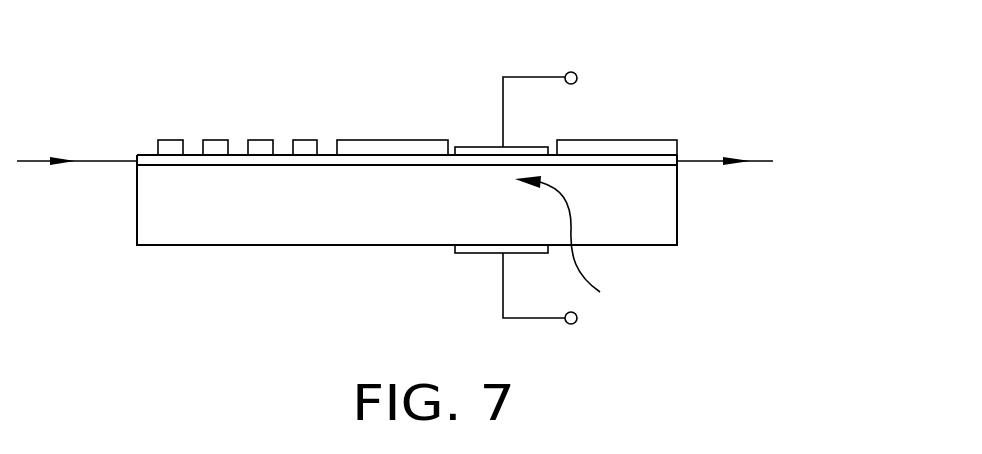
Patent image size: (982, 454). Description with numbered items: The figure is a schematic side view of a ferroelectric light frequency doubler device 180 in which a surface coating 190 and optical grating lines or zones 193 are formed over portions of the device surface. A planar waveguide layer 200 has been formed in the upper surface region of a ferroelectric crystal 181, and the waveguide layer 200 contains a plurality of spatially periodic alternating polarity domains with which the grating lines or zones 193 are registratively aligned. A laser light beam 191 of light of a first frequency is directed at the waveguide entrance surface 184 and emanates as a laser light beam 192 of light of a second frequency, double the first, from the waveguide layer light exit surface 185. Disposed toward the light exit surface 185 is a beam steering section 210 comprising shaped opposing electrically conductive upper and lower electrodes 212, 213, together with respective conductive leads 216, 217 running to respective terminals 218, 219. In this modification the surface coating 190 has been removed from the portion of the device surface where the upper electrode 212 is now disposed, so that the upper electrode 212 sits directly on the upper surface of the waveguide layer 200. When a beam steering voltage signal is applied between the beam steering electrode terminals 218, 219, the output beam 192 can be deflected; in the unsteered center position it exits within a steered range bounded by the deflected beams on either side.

The ferroelectric light frequency doubler device 180 is at (263, 66).
The ferroelectric crystal 181 is at (137, 245).
The waveguide entrance surface 184 is at (137, 166).
The light exit surface 185 is at (680, 165).
The surface coating 190 is at (395, 140).
The laser light beam 191 is at (37, 160).
The laser light beam 192 is at (730, 120).
The optical grating lines or zones 193 is at (262, 138).
The planar waveguide layer 200 is at (428, 165).
The beam steering section 210 is at (584, 242).
The upper electrode 212 is at (543, 147).
The lower electrode 213 is at (473, 257).
The conductive lead 216 is at (503, 113).
The conductive lead 217 is at (502, 302).
The terminal 218 is at (564, 73).
The terminal 219 is at (571, 326).